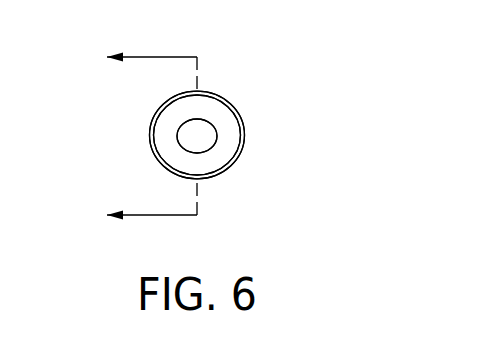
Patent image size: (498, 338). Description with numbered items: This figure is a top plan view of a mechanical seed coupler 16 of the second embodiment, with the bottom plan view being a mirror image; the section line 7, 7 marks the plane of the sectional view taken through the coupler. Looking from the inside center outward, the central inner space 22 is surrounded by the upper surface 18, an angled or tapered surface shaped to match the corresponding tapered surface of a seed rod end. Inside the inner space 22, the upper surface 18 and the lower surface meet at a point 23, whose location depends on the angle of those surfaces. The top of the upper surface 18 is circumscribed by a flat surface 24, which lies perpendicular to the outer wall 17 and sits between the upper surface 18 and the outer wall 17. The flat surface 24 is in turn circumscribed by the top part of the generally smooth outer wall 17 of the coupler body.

The section line 7- 7 is at (141, 135).
The mechanical seed coupler 16 is at (236, 171).
The outer wall 17 is at (240, 110).
The upper surface 18 is at (210, 104).
The inner space 22 is at (192, 136).
The point 23 is at (224, 142).
The flat surface 24 is at (190, 174).